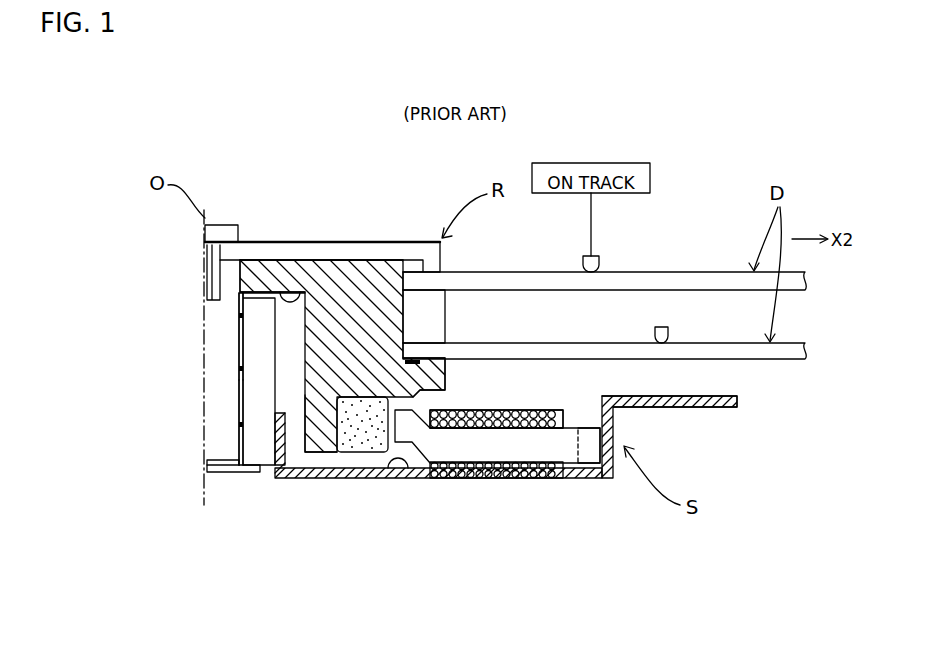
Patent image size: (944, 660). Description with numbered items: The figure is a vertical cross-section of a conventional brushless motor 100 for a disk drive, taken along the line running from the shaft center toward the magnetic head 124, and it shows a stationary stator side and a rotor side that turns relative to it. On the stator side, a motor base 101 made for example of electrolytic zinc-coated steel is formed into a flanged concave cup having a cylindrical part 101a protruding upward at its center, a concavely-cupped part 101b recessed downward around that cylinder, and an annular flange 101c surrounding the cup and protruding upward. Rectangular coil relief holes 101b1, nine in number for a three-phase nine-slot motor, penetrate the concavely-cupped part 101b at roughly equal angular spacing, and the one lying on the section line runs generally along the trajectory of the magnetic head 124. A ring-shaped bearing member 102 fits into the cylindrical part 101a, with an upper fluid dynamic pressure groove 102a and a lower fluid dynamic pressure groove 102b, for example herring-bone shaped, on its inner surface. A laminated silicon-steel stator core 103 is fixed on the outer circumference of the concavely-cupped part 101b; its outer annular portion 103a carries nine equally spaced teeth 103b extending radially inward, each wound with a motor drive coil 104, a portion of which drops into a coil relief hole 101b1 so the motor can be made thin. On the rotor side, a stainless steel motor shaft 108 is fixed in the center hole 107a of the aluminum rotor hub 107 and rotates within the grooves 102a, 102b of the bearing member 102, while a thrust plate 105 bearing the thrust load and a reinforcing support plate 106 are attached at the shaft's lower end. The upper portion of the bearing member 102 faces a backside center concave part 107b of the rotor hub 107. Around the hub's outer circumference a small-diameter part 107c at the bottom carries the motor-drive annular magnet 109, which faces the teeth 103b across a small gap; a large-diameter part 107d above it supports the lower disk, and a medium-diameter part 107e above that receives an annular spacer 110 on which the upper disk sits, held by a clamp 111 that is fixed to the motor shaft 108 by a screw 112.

The conventional brushless motor 100 is at (343, 195).
The motor base 101 is at (722, 411).
The cylindrical part 101a is at (292, 445).
The concavely-cupped part 101b is at (395, 462).
The coil relief hole 101b1 is at (423, 475).
The annular flange 101c is at (685, 393).
The bearing member 102 is at (261, 453).
The fluid dynamic pressure groove 102a is at (237, 352).
The fluid dynamic pressure groove 102b is at (238, 445).
The stator core 103 is at (522, 558).
The annular portion 103a is at (592, 453).
The teeth 103b is at (540, 453).
The motor drive coil 104 is at (553, 410).
The thrust plate 105 is at (217, 467).
The support plate 106 is at (227, 474).
The rotor hub 107 is at (371, 285).
The center hole 107a is at (252, 263).
The backside center concave part 107b is at (297, 292).
The small-diameter part 107c is at (330, 433).
The large-diameter part 107d is at (445, 373).
The medium-diameter part 107e is at (410, 322).
The motor shaft 108 is at (215, 321).
The motor-drive annular magnet 109 is at (363, 453).
The annular spacer 110 is at (432, 305).
The clamp 111 is at (420, 243).
The screw 112 is at (207, 222).
The magnetic head 124 is at (600, 258).